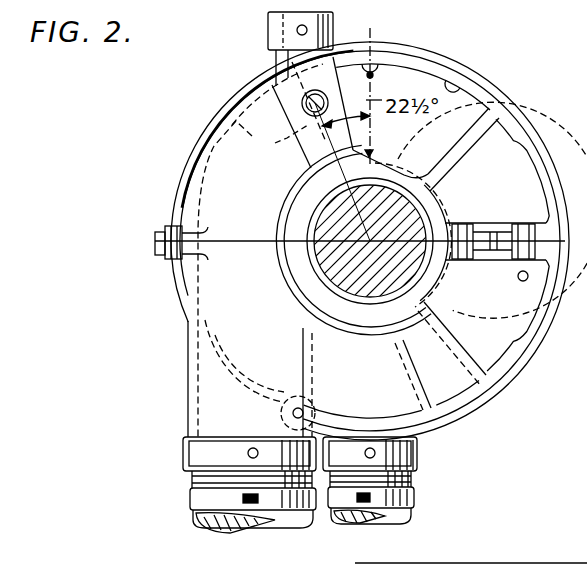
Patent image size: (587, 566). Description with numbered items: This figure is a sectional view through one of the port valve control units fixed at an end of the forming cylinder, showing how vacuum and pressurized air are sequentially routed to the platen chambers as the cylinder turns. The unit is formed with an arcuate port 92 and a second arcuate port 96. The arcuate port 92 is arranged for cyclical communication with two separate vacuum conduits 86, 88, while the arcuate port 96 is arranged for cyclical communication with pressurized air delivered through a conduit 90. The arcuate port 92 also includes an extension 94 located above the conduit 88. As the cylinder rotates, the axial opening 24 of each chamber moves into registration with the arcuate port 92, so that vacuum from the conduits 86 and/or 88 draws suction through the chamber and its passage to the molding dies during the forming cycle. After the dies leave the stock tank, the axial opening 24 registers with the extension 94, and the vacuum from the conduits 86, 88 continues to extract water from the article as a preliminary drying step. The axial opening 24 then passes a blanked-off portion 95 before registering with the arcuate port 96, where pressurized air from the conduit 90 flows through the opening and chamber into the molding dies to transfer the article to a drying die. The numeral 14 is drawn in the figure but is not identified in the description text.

The shaft 14 is at (405, 218).
The axial opening 24 is at (375, 151).
The vacuum conduit 86 is at (400, 519).
The vacuum conduit 88 is at (245, 518).
The conduit 90 is at (333, 18).
The arcuate port 92 is at (380, 392).
The extension 94 is at (217, 293).
The blanked-off portion 95 is at (262, 106).
The arcuate port 96 is at (277, 142).